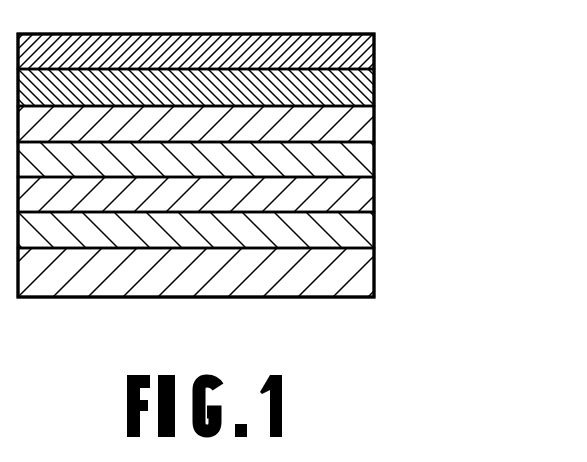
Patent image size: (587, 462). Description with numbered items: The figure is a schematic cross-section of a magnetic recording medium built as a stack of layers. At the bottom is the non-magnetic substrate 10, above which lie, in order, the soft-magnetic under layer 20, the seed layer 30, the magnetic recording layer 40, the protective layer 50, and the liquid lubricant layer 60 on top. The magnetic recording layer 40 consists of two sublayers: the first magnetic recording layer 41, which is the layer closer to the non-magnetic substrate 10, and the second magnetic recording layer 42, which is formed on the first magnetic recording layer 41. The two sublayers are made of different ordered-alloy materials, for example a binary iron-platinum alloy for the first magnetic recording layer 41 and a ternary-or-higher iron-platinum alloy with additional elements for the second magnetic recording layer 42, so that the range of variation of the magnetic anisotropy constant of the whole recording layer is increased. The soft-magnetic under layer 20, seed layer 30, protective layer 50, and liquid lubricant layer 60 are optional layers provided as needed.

The non-magnetic substrate 10 is at (374, 264).
The soft-magnetic under layer 20 is at (374, 227).
The seed layer 30 is at (374, 192).
The magnetic recording layer 40 is at (282, 144).
The first magnetic recording layer 41 is at (374, 156).
The second magnetic recording layer 42 is at (374, 120).
The protective layer 50 is at (374, 83).
The liquid lubricant layer 60 is at (374, 46).